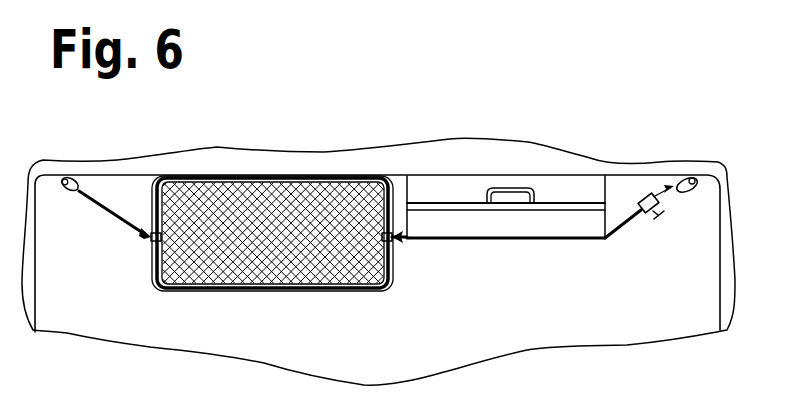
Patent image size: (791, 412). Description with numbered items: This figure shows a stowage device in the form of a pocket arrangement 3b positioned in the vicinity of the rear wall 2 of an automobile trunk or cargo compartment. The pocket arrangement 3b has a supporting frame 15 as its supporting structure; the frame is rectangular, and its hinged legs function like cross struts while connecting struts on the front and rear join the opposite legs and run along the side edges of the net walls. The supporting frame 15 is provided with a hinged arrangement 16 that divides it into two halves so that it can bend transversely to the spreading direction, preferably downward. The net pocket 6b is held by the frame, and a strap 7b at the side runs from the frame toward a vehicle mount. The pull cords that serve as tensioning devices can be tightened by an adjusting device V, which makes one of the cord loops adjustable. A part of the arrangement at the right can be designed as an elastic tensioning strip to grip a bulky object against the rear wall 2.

The rear wall 2 is at (412, 166).
The pocket arrangement 3b is at (422, 277).
The net pocket 6b is at (271, 190).
The strap 7b is at (108, 206).
The supporting frame 15 is at (243, 252).
The hinged arrangement 16 is at (150, 241).
The adjusting device V is at (643, 219).